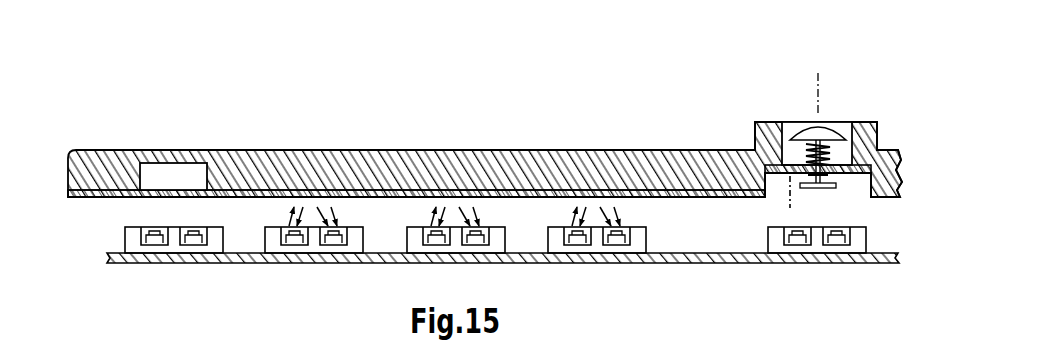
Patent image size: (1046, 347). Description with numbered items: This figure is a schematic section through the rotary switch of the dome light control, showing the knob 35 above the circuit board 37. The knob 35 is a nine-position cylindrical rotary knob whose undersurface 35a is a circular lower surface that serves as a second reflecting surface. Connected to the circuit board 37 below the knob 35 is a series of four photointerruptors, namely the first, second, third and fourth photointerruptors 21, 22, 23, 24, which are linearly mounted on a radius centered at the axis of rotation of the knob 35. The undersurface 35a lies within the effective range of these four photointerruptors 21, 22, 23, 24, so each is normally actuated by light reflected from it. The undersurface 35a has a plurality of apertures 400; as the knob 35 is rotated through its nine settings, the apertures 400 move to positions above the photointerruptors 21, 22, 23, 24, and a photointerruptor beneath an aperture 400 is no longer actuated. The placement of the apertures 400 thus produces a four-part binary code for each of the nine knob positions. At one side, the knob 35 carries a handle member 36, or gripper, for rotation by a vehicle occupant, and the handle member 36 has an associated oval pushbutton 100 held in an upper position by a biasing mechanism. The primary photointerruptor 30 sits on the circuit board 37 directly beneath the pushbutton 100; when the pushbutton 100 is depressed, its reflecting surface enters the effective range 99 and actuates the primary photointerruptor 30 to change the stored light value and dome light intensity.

The rotary knob 35 is at (610, 150).
The undersurface of the knob 35a is at (108, 198).
The apertures 400 is at (163, 177).
The handle member 36 is at (862, 124).
The pushbutton 100 is at (830, 130).
The effective range 99 is at (789, 208).
The circuit board 37 is at (877, 256).
The first photointerruptor 21 is at (173, 243).
The second photointerruptor 22 is at (313, 243).
The third photointerruptor 23 is at (455, 245).
The fourth photointerruptor 24 is at (597, 243).
The primary photointerruptor 30 is at (778, 243).